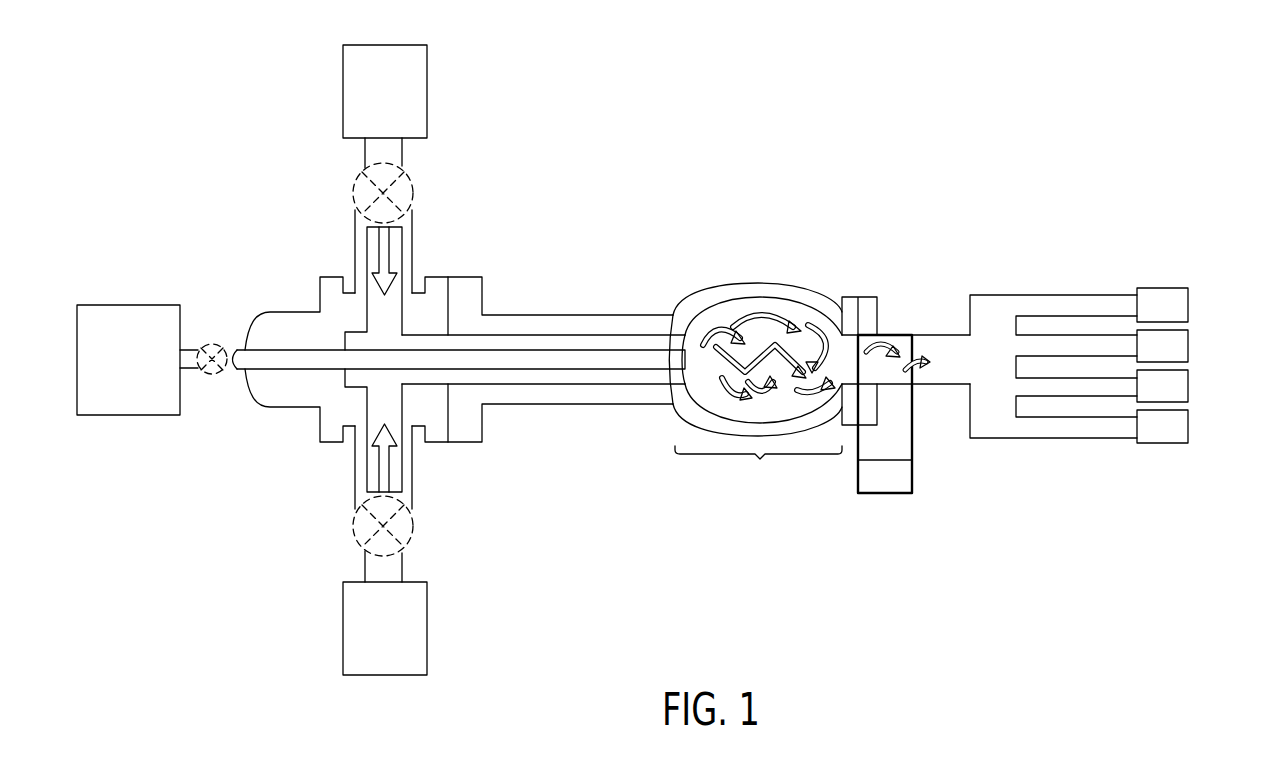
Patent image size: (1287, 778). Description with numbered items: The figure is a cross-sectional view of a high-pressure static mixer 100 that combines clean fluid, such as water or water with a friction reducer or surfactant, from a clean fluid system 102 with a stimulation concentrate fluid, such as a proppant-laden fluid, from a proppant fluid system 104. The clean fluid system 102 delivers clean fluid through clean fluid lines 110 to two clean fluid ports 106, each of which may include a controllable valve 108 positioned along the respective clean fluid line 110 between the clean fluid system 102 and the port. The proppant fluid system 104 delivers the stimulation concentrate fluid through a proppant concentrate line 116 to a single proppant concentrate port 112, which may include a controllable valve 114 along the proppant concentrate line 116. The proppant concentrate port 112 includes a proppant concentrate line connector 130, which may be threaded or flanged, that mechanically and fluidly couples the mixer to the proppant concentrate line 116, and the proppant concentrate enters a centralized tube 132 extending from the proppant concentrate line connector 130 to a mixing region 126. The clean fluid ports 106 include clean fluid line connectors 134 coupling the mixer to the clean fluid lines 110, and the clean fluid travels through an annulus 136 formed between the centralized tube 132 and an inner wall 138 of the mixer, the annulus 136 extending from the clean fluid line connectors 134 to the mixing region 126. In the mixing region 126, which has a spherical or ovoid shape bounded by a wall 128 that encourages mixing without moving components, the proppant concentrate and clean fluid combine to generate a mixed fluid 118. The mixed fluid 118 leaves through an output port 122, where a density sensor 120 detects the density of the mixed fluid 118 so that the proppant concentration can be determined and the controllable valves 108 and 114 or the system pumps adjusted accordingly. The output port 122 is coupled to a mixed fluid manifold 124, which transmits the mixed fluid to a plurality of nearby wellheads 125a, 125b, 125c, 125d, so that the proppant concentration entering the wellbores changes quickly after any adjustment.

The high-pressure static mixer 100 is at (757, 238).
The clean fluid system 102 is at (427, 90).
The proppant fluid system 104 is at (150, 304).
The clean fluid ports 106 is at (412, 248).
The controllable valves 108 is at (413, 193).
The clean fluid lines 110 is at (366, 151).
The proppant concentrate port 112 is at (232, 348).
The controllable valve 114 is at (207, 373).
The proppant concentrate line 116 is at (184, 349).
The mixed fluid 118 is at (826, 318).
The density sensor 120 is at (884, 496).
The output port 122 is at (850, 316).
The mixed fluid manifold 124 is at (1015, 431).
The wellhead 125a is at (1190, 307).
The wellhead 125b is at (1190, 347).
The wellhead 125c is at (1190, 388).
The wellhead 125d is at (1190, 428).
The mixing region 126 is at (758, 470).
The wall 128 is at (732, 289).
The proppant concentrate line connector 130 is at (241, 368).
The centralized tube 132 is at (607, 355).
The clean fluid line connectors 134 is at (366, 229).
The annulus 136 is at (645, 318).
The inner wall 138 is at (650, 386).